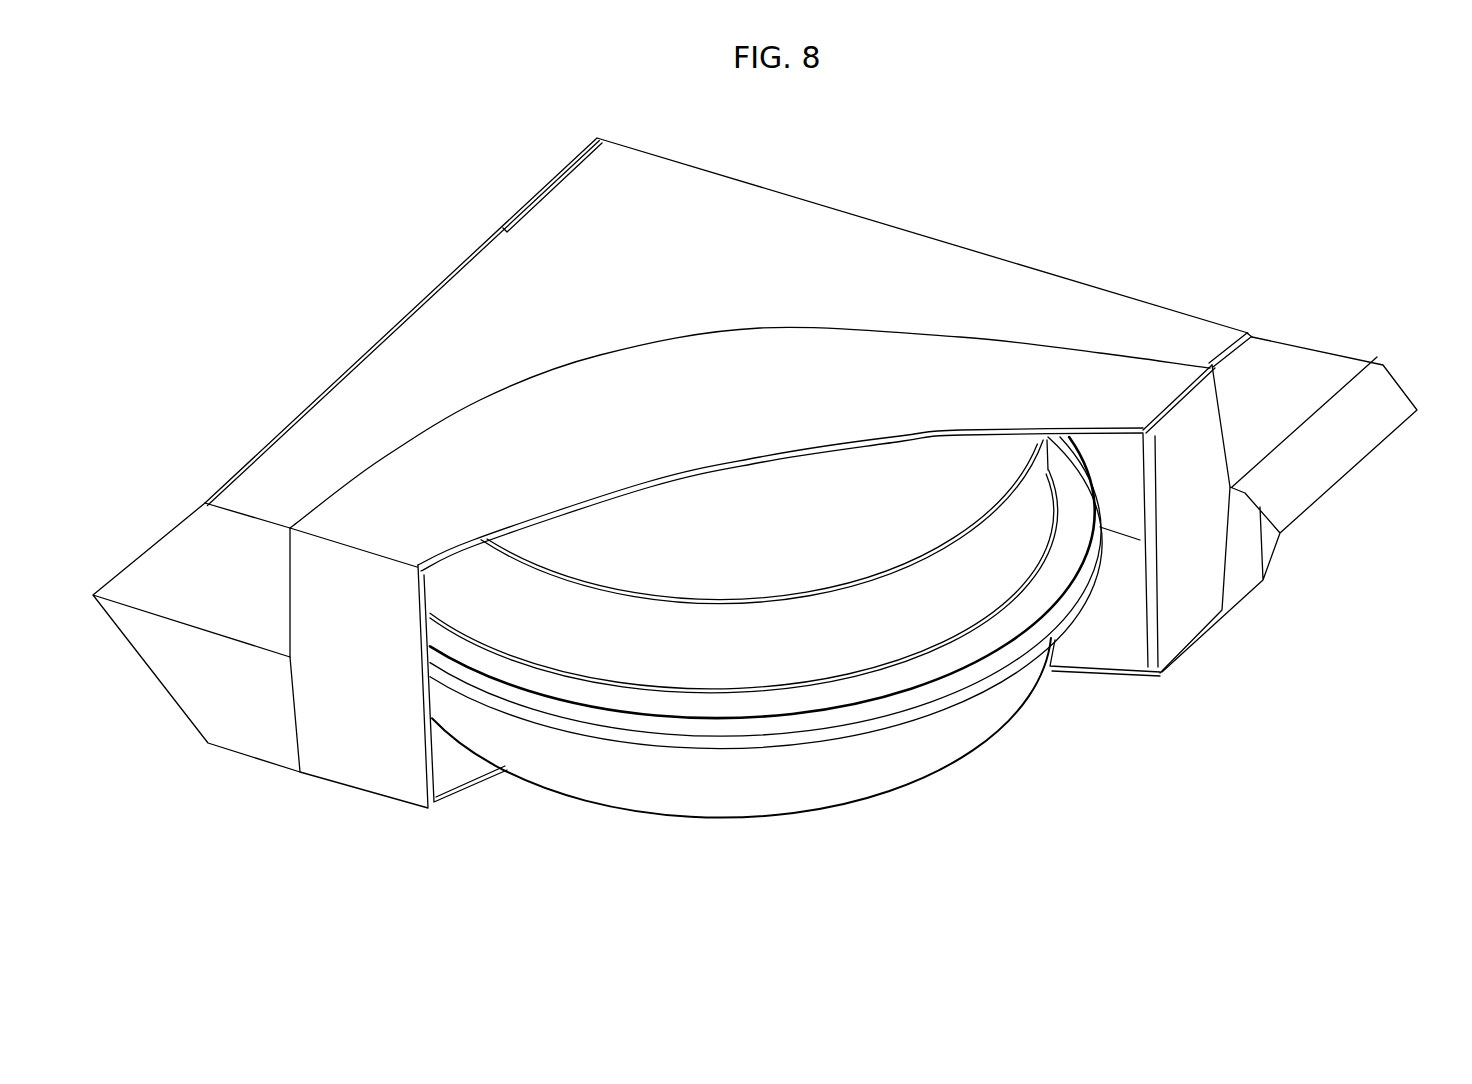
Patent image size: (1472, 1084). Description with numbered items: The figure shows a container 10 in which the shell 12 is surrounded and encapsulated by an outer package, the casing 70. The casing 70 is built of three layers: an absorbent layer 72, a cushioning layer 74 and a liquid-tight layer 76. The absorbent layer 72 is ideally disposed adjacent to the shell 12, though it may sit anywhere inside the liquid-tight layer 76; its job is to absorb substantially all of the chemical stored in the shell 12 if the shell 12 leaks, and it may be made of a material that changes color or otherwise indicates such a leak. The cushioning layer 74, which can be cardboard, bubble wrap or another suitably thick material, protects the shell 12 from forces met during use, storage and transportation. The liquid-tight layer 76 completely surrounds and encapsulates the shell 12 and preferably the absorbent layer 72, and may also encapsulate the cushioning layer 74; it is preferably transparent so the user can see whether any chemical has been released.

The luminaire housing 10 is at (413, 206).
The shell 12 is at (926, 833).
The casing 70 is at (306, 380).
The absorbent layer 72 is at (925, 520).
The cushioning layer 74 is at (893, 380).
The liquid-tight layer 76 is at (1323, 382).